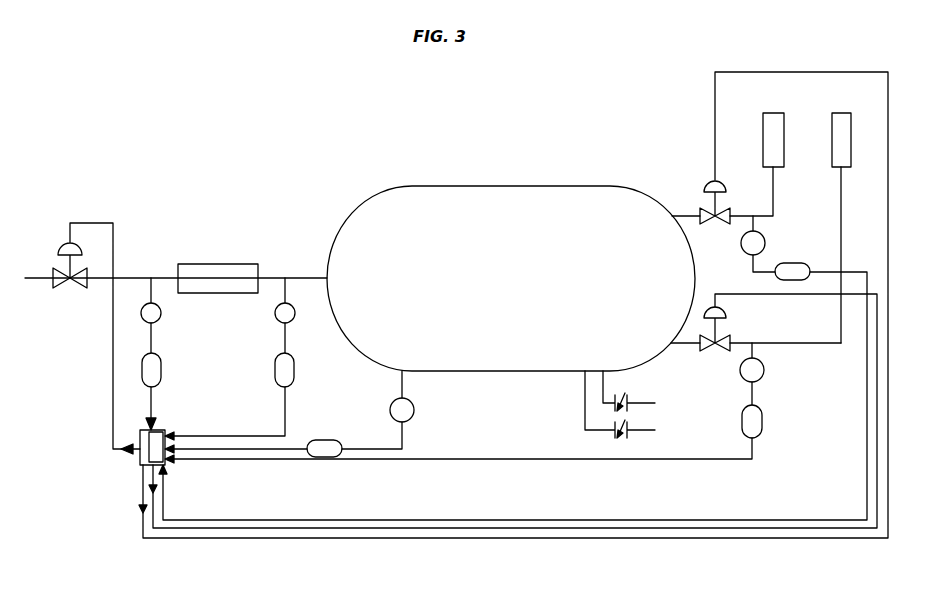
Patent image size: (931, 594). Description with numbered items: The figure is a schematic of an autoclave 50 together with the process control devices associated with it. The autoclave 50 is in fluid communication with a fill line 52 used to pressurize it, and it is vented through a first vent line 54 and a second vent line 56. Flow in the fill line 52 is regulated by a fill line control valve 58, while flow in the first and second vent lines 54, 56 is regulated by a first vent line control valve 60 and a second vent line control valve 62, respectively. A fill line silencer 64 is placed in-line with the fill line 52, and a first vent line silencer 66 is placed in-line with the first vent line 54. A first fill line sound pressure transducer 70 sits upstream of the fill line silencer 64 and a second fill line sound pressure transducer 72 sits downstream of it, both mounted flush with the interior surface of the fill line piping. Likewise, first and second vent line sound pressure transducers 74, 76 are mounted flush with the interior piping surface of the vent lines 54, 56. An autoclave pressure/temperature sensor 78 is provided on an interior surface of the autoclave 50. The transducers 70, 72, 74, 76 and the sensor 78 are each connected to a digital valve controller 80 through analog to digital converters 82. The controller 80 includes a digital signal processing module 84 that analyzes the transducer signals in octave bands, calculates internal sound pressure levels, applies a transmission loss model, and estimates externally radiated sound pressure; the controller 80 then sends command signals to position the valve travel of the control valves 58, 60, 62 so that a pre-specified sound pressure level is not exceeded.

The autoclave 50 is at (518, 185).
The fill line 52 is at (128, 275).
The first vent line 54 is at (683, 214).
The second vent line 56 is at (684, 348).
The fill line control valve 58 is at (58, 272).
The first vent line control valve 60 is at (700, 210).
The second vent line control valve 62 is at (733, 338).
The fill line silencer 64 is at (217, 262).
The first vent line silencer 66 is at (852, 143).
The first fill line sound pressure transducer 70 is at (161, 313).
The second fill line sound pressure transducer 72 is at (295, 313).
The first vent line sound pressure transducer 74 is at (765, 238).
The second vent line sound pressure transducer 76 is at (764, 372).
The autoclave pressure/temperature sensor 78 is at (414, 410).
The digital valve controller 80 is at (137, 460).
The analog to digital converter 82 is at (161, 372).
The digital signal processing module 84 is at (163, 428).